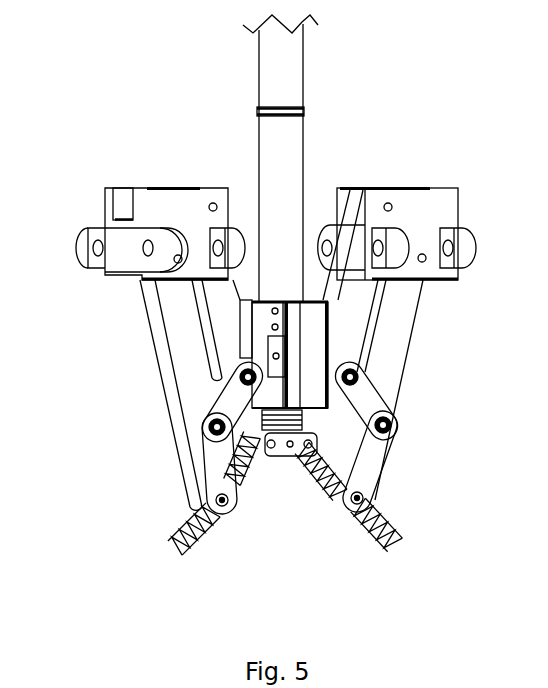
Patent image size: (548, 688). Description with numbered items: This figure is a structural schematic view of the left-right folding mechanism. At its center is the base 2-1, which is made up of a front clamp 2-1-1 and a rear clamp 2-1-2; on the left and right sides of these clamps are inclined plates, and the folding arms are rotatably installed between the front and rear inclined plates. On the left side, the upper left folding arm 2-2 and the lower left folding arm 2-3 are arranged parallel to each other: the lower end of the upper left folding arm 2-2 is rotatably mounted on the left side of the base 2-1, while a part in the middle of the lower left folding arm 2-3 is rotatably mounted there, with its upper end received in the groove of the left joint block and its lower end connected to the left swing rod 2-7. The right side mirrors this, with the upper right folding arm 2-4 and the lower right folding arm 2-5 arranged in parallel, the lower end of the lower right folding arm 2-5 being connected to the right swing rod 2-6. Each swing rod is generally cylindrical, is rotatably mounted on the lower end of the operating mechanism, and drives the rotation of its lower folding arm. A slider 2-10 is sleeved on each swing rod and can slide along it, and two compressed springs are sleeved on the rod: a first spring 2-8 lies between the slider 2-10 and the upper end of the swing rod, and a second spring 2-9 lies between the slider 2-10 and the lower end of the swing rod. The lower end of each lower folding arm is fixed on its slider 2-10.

The base 2-1 is at (268, 300).
The front clamp 2-1-1 is at (395, 425).
The rear clamp 2-1-2 is at (167, 432).
The upper left folding arm 2-2 is at (353, 297).
The lower left folding arm 2-3 is at (392, 342).
The upper right folding arm 2-4 is at (235, 300).
The lower right folding arm 2-5 is at (187, 362).
The right swing rod 2-6 is at (175, 536).
The left swing rod 2-7 is at (397, 536).
The first spring 2-8 is at (283, 508).
The second spring 2-9 is at (320, 597).
The slider 2-10 is at (345, 495).